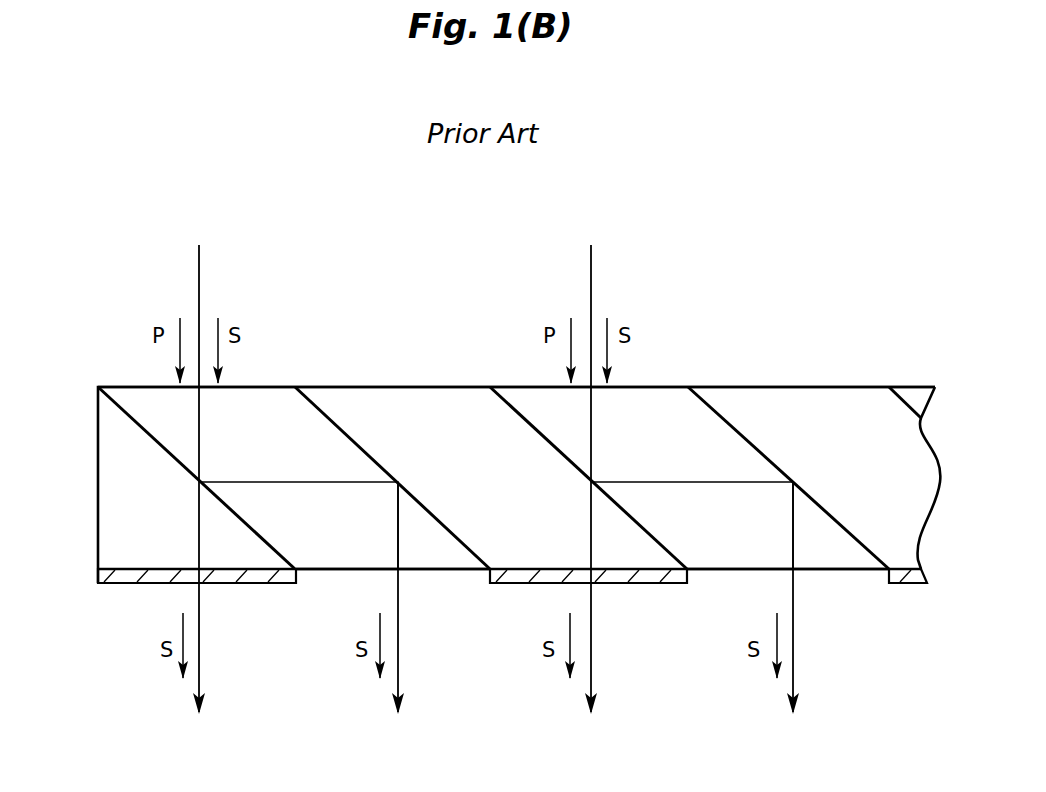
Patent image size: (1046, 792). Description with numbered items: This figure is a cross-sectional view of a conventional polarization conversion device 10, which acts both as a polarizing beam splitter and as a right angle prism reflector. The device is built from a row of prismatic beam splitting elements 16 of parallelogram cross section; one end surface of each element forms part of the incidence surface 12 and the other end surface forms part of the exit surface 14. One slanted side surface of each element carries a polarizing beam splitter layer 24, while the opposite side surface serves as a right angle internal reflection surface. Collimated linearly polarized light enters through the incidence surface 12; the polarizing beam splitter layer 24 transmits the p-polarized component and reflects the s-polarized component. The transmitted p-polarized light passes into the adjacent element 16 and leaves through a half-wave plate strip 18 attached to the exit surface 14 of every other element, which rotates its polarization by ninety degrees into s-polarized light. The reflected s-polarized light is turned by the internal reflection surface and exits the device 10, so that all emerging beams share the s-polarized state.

The polarization conversion device 10 is at (380, 303).
The incidence surface 12 is at (813, 386).
The exit surface 14 is at (861, 570).
The prismatic beam splitting element 16 is at (112, 446).
The half-wave plate strip 18 is at (120, 585).
The polarizing beam splitter layer 24 is at (132, 420).